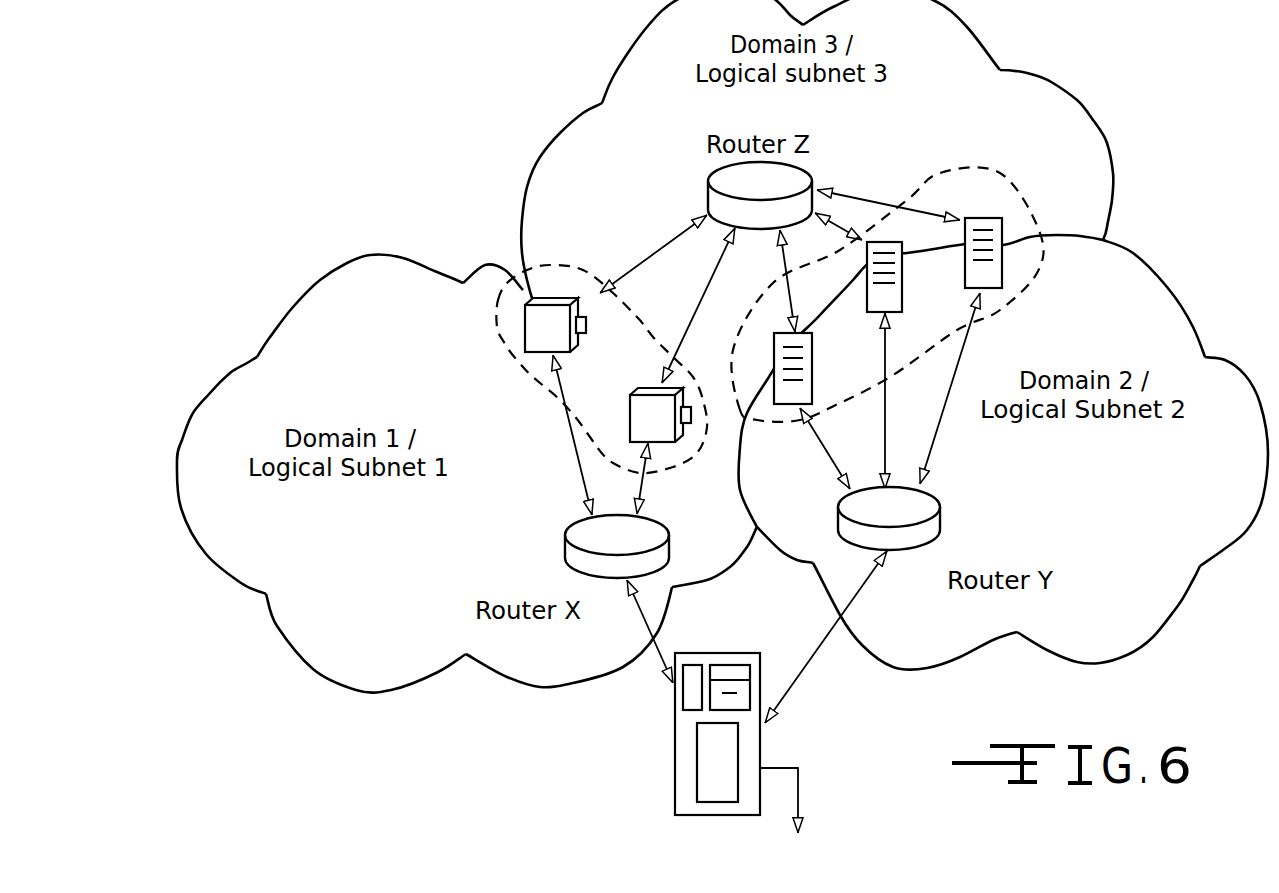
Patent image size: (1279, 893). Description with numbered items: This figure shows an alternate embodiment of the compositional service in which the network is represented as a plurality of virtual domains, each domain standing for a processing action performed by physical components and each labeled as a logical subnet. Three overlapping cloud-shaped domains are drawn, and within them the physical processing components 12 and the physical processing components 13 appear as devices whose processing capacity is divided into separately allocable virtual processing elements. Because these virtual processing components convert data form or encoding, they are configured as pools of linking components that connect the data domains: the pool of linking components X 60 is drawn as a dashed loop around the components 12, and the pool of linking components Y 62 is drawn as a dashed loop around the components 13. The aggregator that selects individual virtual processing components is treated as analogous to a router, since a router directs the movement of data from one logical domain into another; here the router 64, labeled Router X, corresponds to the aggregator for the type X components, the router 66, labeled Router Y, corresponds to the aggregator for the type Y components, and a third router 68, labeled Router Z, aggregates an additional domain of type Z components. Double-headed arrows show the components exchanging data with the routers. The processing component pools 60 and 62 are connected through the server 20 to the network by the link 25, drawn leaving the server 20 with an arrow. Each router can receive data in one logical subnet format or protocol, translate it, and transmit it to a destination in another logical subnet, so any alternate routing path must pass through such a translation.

The physical processing component 12 is at (525, 333).
The physical processing component 13 is at (812, 363).
The server 20 is at (733, 653).
The link 25 is at (800, 788).
The pool of linking components X 60 is at (568, 265).
The pool of linking components Y 62 is at (1007, 183).
The router 64 is at (568, 549).
The router 66 is at (940, 510).
The third router 68 is at (708, 192).